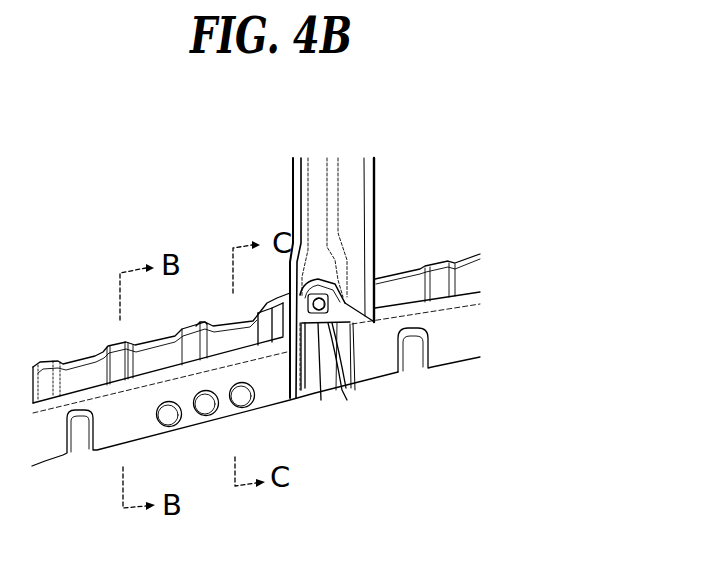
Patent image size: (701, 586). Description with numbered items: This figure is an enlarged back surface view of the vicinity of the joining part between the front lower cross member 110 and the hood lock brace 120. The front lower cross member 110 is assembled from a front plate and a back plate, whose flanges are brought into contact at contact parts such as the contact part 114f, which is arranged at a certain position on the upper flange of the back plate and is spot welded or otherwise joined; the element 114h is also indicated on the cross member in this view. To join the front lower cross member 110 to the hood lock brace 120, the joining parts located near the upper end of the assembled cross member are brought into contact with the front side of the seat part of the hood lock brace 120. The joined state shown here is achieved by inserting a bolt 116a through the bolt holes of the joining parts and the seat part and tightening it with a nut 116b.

The front lower cross member 110 is at (374, 370).
The hood lock brace 120 is at (375, 208).
The contact part 114f is at (206, 336).
The hole 114h is at (235, 340).
The bolt 116a is at (322, 343).
The nut 116b is at (294, 390).